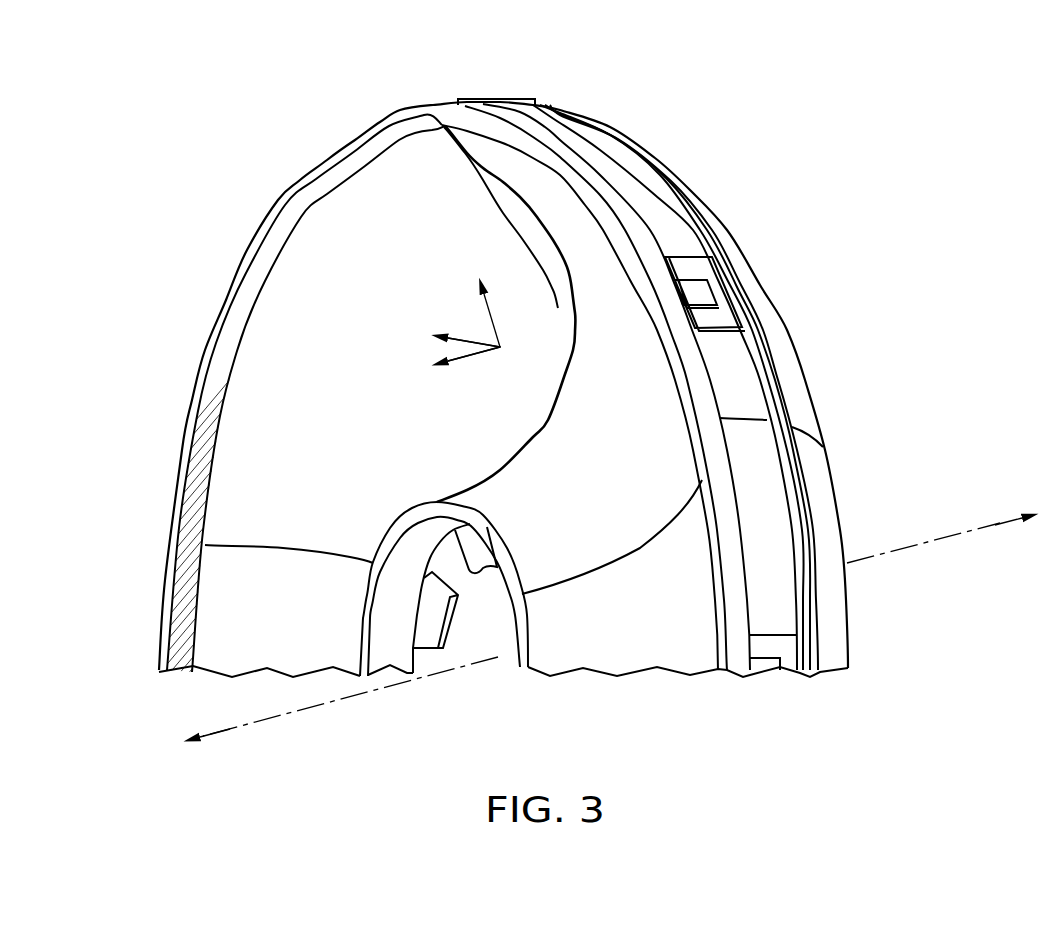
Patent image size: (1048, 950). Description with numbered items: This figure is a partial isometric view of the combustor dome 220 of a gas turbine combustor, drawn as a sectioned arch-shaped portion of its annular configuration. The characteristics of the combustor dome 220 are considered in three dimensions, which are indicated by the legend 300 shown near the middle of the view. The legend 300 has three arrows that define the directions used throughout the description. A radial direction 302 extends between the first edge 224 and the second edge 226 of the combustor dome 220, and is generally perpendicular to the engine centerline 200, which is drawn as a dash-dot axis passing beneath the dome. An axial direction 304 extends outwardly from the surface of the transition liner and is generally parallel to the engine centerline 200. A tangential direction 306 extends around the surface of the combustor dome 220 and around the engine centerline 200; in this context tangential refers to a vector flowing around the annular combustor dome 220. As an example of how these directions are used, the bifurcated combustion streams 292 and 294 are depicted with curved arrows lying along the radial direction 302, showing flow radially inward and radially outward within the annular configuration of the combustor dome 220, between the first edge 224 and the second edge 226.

The engine centerline 200 is at (324, 706).
The combustor dome 220 is at (697, 181).
The first edge 224 is at (360, 625).
The second edge 226 is at (432, 103).
The bifurcated combustion stream 292 is at (436, 486).
The bifurcated combustion stream 294 is at (446, 158).
The legend 300 is at (439, 307).
The radial direction 302 is at (500, 347).
The axial direction 304 is at (476, 357).
The tangential direction 306 is at (447, 337).